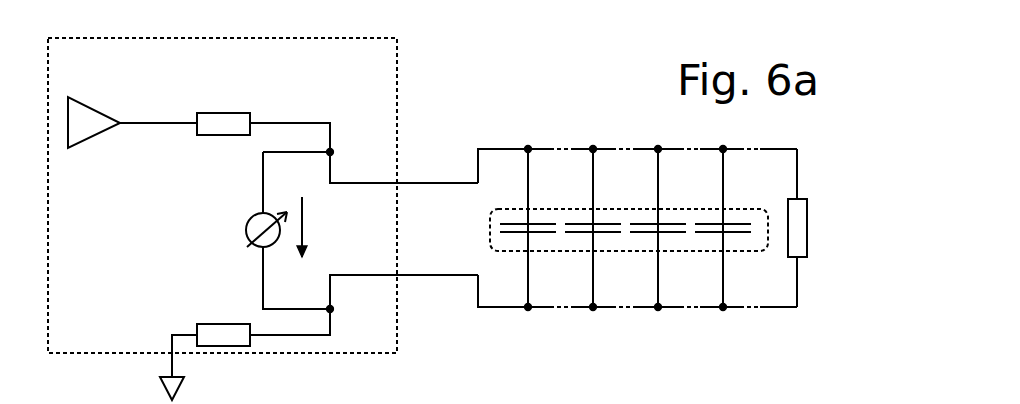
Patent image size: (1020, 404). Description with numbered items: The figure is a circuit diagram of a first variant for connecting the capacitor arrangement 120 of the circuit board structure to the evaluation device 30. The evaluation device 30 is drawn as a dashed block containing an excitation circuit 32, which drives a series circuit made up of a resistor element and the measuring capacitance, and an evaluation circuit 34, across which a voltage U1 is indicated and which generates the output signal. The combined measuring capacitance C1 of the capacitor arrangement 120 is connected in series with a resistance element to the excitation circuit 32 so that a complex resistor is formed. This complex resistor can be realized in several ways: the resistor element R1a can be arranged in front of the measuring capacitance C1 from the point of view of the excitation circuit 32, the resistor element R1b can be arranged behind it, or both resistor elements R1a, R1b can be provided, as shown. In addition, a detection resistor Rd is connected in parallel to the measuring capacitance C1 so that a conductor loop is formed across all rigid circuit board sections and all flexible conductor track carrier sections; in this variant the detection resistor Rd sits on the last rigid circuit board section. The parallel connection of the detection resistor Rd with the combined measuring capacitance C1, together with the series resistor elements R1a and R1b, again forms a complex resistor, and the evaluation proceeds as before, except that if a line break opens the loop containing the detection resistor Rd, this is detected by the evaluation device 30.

The evaluation device 30 is at (397, 65).
The excitation circuit 32 is at (80, 110).
The evaluation circuit 34 is at (247, 229).
The capacitor arrangement 120 is at (635, 183).
The resistor element R1a is at (225, 108).
The resistor element R1b is at (245, 339).
The voltage U1 is at (318, 227).
The combined measuring capacitance C1 is at (492, 228).
The detection resistor Rd is at (815, 228).